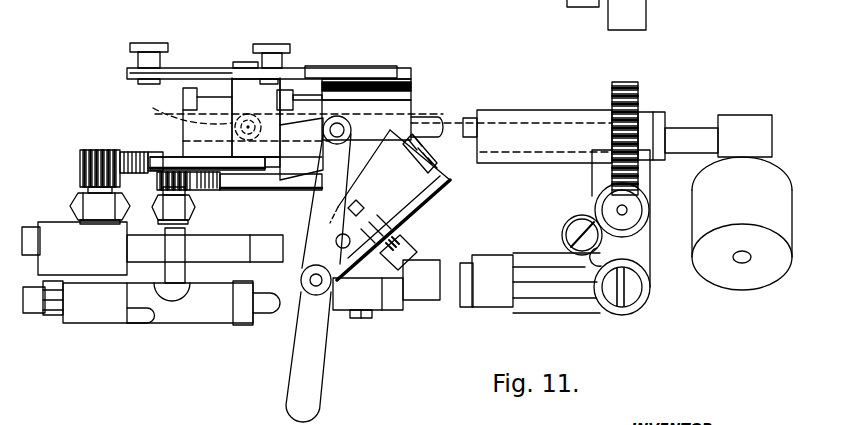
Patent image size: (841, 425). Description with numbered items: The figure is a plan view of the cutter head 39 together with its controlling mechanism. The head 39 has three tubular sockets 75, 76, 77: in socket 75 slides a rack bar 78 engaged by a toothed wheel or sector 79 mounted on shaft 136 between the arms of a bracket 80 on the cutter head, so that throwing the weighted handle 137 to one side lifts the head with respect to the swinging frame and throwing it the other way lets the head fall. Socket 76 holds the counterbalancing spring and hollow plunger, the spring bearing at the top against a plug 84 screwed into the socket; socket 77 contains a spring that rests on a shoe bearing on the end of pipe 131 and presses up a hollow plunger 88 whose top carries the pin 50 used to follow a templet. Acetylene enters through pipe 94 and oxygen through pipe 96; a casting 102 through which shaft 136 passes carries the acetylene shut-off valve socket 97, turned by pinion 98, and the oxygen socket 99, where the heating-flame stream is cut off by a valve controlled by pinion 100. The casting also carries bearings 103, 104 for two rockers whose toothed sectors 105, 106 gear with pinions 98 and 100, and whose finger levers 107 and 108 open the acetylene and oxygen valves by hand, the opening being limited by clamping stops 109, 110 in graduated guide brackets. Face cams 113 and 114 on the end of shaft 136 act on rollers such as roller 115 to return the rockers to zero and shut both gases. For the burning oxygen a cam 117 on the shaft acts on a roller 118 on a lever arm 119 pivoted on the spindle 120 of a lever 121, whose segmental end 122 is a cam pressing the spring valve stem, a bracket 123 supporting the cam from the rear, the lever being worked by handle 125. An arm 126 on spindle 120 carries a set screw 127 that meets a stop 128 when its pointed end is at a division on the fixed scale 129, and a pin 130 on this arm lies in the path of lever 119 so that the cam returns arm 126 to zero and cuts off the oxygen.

The clamping stop 109 is at (151, 62).
The clamping stop 110 is at (271, 60).
The finger lever 107 is at (245, 62).
The bearing 103 is at (245, 90).
The finger lever 108 is at (372, 66).
The face cam 114 is at (296, 90).
The bearing 104 is at (318, 93).
The face cam 113 is at (197, 96).
The roller 115 is at (176, 110).
The cam 117 is at (300, 137).
The roller 118 is at (398, 114).
The lever arm 119 is at (323, 160).
The casting 102 is at (432, 128).
The shaft 136 is at (470, 128).
The bracket 80 is at (552, 147).
The toothed wheel or sector 79 is at (626, 120).
The pinion 98 is at (84, 160).
The toothed sector 105 is at (125, 152).
The pinion 100 is at (178, 181).
The toothed sector 106 is at (230, 181).
The valve socket 97 is at (77, 238).
The acetylene pipe 94 is at (30, 235).
The segmental end (cam face) 122 is at (170, 285).
The valve socket 99 is at (208, 307).
The bracket 123 is at (140, 286).
The lever 121 is at (233, 285).
The oxygen pipe 96 is at (35, 308).
The handle 125 is at (313, 372).
The spindle 120 is at (320, 286).
The fixed scale 129 is at (424, 162).
The stop 128 is at (362, 210).
The arm 126 is at (392, 214).
The set screw 127 is at (404, 248).
The pin 130 is at (372, 290).
The pipe 131 is at (462, 296).
The cutter head 39 is at (638, 255).
The tubular socket 76 is at (564, 233).
The plug 84 is at (578, 230).
The rack bar 78 is at (636, 219).
The tubular socket 75 is at (650, 214).
The hollow plunger 88 is at (637, 310).
The tubular socket 77 is at (621, 312).
The pin 50 is at (602, 308).
The weighted handle 137 is at (713, 266).